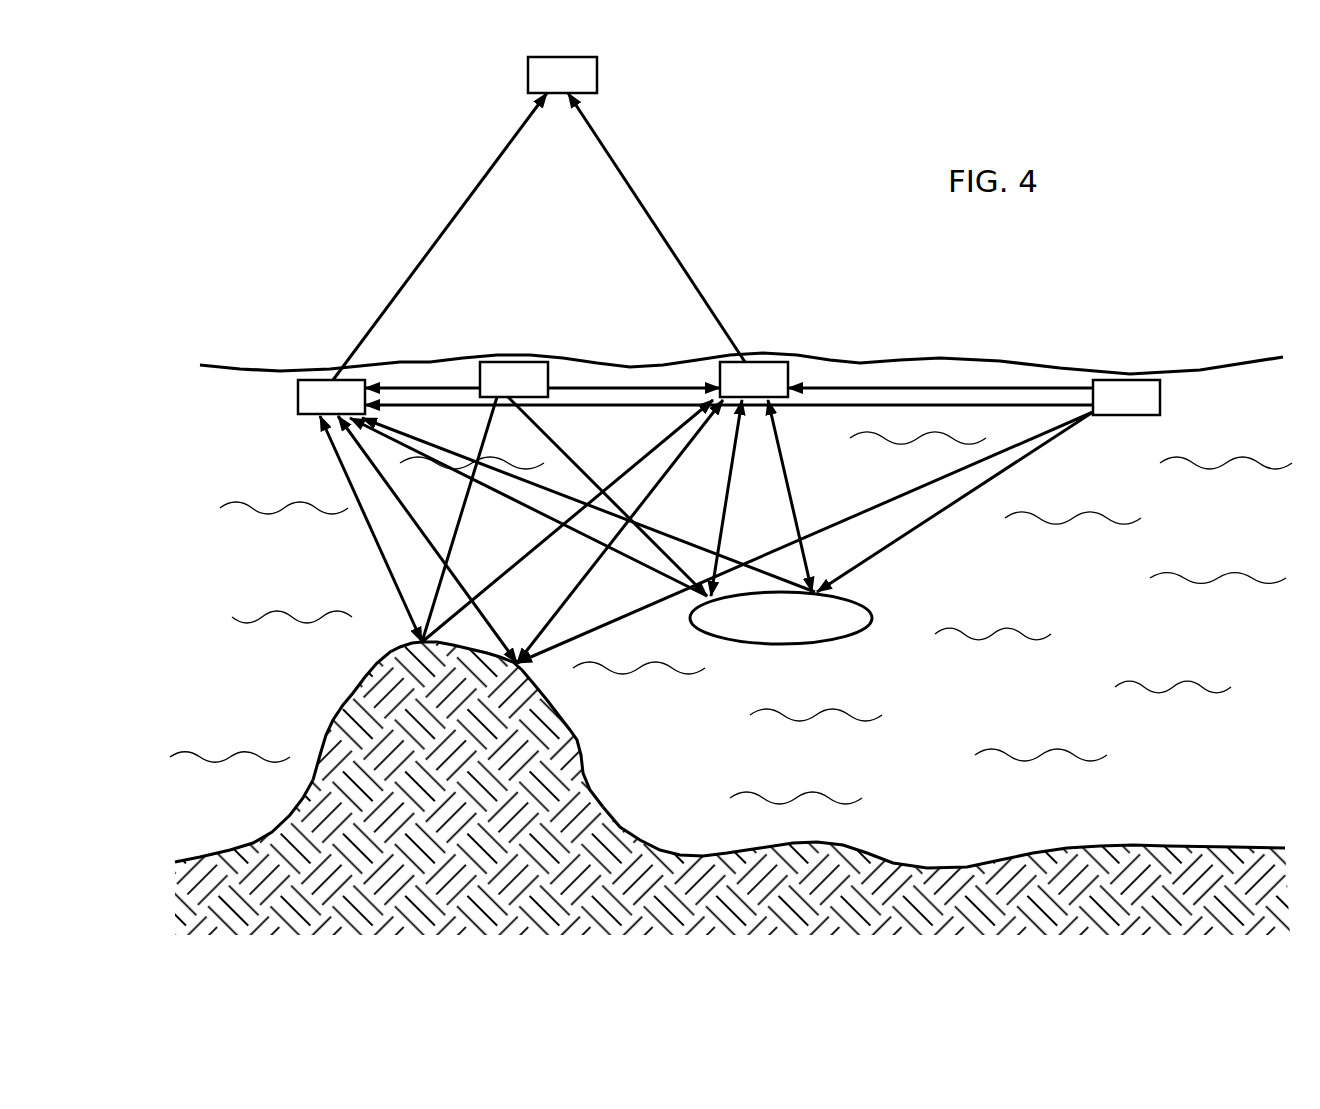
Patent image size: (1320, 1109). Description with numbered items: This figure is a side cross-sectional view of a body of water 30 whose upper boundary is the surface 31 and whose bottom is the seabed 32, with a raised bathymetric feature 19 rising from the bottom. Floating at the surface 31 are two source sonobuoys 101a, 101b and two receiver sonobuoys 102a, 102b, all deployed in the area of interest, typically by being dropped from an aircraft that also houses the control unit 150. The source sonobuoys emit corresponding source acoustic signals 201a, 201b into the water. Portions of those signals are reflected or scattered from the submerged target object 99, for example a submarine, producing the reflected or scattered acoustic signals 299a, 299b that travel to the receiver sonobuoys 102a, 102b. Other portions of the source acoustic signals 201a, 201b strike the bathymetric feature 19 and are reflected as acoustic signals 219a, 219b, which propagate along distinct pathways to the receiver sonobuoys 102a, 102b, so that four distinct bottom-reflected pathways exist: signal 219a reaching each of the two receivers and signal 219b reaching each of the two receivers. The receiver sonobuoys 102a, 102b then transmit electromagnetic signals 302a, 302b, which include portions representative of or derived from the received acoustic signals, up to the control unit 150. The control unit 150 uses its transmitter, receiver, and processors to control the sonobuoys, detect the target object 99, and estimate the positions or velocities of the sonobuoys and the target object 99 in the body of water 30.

The control unit 150 is at (583, 89).
The receiver sonobuoy 102a is at (358, 411).
The receiver sonobuoy 102b is at (780, 393).
The source sonobuoy 101a is at (540, 393).
The source sonobuoy 101b is at (1153, 411).
The target object 99 is at (795, 633).
The bathymetric feature 19 is at (473, 760).
The body of water 30 is at (280, 680).
The surface 31 is at (1188, 368).
The seabed 32 is at (1153, 843).
The source acoustic signal 201a is at (487, 443).
The source acoustic signal 201b is at (958, 468).
The acoustic signal 219a is at (420, 528).
The acoustic signal 219b is at (487, 622).
The reflected or scattered acoustic signal 299a is at (727, 492).
The reflected or scattered acoustic signal 299b is at (780, 453).
The electromagnetic signal 302a is at (421, 262).
The electromagnetic signal 302b is at (680, 262).